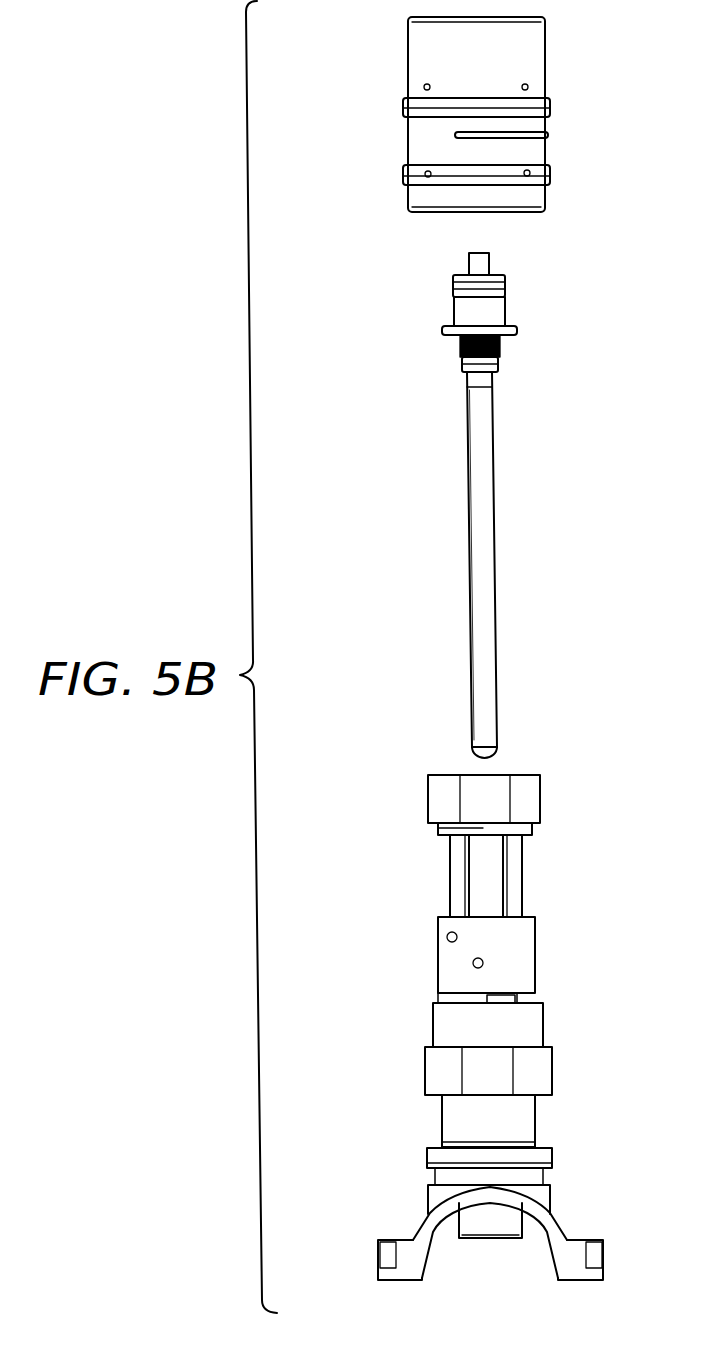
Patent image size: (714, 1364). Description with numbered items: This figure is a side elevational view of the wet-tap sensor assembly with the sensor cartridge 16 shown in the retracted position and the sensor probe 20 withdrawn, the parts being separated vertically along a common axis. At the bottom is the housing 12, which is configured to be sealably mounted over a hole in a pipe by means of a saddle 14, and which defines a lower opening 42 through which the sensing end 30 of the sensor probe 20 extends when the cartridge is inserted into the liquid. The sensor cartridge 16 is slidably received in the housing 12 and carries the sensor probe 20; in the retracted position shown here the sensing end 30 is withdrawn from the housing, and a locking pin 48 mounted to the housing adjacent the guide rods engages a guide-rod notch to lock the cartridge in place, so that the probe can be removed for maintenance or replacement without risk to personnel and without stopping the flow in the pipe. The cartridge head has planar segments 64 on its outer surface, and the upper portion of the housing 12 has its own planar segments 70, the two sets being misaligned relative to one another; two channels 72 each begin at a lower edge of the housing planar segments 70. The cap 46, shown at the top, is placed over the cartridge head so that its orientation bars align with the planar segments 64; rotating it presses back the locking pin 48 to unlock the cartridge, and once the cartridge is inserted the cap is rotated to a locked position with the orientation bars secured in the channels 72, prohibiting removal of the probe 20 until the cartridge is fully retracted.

The housing 12 is at (543, 1013).
The saddle 14 is at (553, 1193).
The sensor cartridge 16 is at (448, 873).
The sensor probe 20 is at (482, 453).
The sensing end 30 is at (470, 738).
The lower opening 42 is at (488, 1240).
The cap 46 is at (549, 108).
The locking pin 48 is at (447, 937).
The planar segments 64 is at (507, 778).
The planar segments 70 is at (538, 928).
The channels 72 is at (515, 1000).